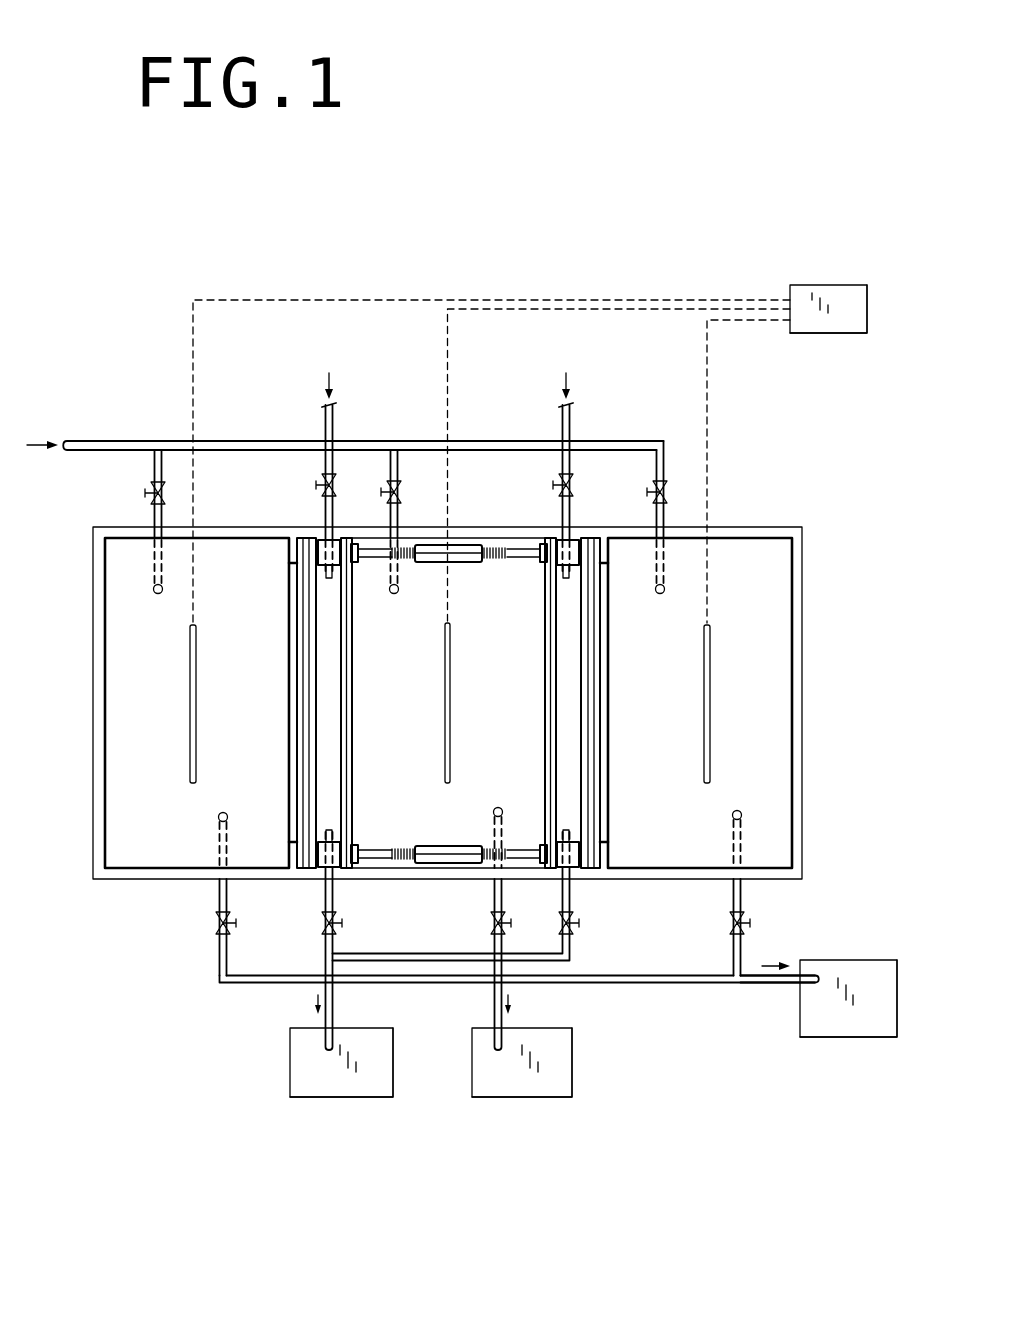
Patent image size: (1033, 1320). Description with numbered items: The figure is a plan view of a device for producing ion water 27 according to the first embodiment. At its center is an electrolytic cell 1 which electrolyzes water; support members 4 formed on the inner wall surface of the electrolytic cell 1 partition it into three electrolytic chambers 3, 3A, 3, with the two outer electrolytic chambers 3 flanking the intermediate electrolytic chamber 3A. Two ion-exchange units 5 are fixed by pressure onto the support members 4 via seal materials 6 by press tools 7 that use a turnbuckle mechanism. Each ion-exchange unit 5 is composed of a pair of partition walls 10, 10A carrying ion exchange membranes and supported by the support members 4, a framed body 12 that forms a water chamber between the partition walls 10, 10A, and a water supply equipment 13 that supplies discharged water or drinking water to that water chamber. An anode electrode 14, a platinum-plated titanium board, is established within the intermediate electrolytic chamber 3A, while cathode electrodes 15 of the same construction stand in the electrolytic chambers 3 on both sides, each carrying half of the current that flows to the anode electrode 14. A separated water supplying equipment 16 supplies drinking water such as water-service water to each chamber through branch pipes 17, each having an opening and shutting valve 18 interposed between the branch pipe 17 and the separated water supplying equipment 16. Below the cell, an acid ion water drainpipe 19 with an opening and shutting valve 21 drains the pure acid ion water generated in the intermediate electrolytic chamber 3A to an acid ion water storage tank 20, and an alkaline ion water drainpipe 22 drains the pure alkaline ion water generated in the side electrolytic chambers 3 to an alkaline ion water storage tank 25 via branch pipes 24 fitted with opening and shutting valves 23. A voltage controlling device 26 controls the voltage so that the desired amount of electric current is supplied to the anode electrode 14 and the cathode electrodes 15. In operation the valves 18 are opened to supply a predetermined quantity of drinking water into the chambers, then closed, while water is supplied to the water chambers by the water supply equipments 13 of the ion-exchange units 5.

The electrolytic cell 1 is at (812, 557).
The electrolytic chamber 3 is at (251, 762).
The intermediate electrolytic chamber 3A is at (521, 677).
The support member 4 is at (288, 561).
The ion-exchange unit 5 is at (356, 748).
The seal material 6 is at (297, 797).
The press tool 7 is at (476, 565).
The partition wall 10 is at (300, 641).
The partition wall 10A is at (355, 640).
The framed body 12 is at (318, 543).
The water supply equipment 13 is at (322, 898).
The anode electrode 14 is at (445, 711).
The cathode electrode 15 is at (189, 711).
The separated water supplying equipment 16 is at (115, 440).
The branch pipe 17 is at (165, 468).
The opening and shutting valve 18 is at (145, 493).
The acid ion water drainpipe 19 is at (495, 1003).
The acid ion water storage tank 20 is at (535, 1100).
The opening and shutting valve 21 is at (495, 920).
The alkaline ion water drainpipe 22 is at (759, 984).
The opening and shutting valve 23 is at (212, 920).
The branch pipe 24 is at (220, 960).
The alkaline ion water storage tank 25 is at (850, 1039).
The voltage controlling device 26 is at (852, 340).
The device for producing ion water 27 is at (725, 232).